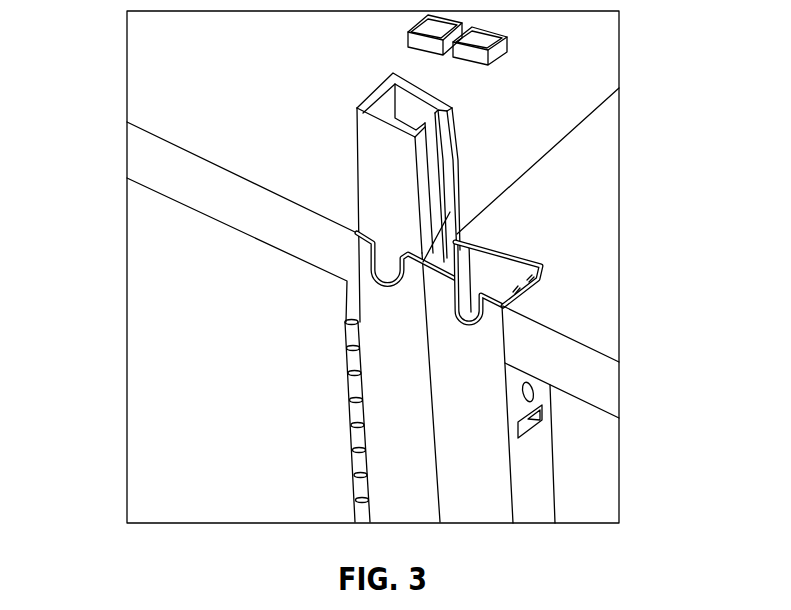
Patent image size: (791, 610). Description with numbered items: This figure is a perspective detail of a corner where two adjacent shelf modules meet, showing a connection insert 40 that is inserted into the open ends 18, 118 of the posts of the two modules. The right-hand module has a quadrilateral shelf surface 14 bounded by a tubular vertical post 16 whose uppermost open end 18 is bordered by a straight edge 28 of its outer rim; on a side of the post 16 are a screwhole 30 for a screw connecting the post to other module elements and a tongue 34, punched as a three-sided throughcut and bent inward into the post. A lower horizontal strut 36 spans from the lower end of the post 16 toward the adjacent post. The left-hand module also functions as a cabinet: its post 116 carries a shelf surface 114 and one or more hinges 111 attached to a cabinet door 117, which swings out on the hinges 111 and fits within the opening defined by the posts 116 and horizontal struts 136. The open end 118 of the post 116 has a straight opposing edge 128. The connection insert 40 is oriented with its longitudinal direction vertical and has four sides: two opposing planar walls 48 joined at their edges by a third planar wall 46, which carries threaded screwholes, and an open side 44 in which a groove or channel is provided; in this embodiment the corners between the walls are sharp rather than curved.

The shelf surface 14 is at (598, 182).
The vertical post 16 is at (480, 452).
The open end 18 is at (494, 278).
The edge of outer rim 28 is at (537, 258).
The screwhole 30 is at (534, 391).
The tongue 34 is at (546, 432).
The lower horizontal strut 36 is at (593, 376).
The connection insert 40 is at (386, 145).
The open side 44 is at (447, 128).
The third planar wall 46 is at (384, 95).
The planar wall 48 is at (383, 177).
The hinge 111 is at (353, 363).
The shelf surface 114 is at (282, 80).
The post 116 is at (393, 445).
The cabinet door 117 is at (153, 363).
The open end 118 is at (360, 233).
The straight opposing edge 128 is at (420, 262).
The horizontal strut 136 is at (203, 193).